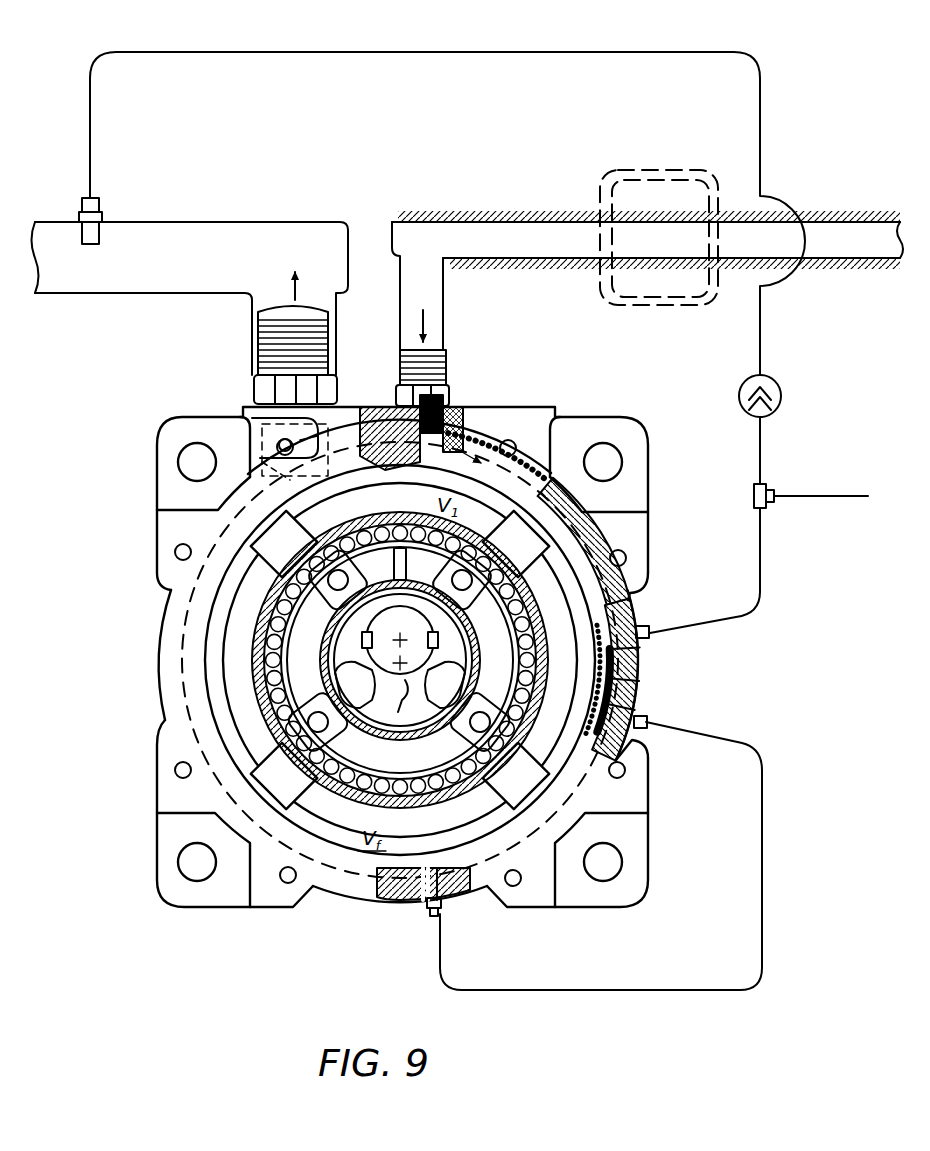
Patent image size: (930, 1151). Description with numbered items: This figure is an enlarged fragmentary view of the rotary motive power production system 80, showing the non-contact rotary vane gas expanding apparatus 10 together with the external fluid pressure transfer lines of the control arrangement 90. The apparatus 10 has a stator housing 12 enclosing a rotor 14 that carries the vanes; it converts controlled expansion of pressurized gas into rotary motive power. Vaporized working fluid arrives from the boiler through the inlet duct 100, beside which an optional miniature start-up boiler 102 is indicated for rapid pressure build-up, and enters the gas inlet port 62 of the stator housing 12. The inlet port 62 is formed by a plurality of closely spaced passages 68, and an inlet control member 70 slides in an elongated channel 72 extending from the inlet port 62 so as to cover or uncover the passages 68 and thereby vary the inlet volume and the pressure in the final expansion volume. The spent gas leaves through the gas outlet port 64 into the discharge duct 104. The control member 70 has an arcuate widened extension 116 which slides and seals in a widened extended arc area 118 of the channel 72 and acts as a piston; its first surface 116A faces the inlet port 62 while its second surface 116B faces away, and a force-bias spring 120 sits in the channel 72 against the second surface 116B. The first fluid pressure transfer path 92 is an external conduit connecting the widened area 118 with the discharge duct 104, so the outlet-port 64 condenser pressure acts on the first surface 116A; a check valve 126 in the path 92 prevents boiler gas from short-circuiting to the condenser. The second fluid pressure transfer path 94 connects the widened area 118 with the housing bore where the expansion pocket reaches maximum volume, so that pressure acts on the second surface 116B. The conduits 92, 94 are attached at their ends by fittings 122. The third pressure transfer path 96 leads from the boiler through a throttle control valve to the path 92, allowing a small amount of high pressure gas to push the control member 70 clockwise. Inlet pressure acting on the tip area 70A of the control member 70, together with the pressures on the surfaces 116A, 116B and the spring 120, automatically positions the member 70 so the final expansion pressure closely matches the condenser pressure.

The non-contact rotary vane gas expanding apparatus 10 is at (155, 608).
The stator housing 12 is at (150, 702).
The rotor 14 is at (220, 658).
The gas inlet port 62 is at (466, 420).
The gas outlet port 64 is at (233, 472).
The passages 68 is at (318, 512).
The inlet control member 70 is at (588, 520).
The tip area 70A is at (530, 426).
The channel 72 is at (580, 588).
The rotary motive power production system 80 is at (416, 216).
The control arrangement 90 is at (768, 618).
The first fluid pressure transfer path 92 is at (350, 52).
The second fluid pressure transfer path 94 is at (598, 992).
The third pressure transfer path 96 is at (822, 496).
The inlet duct 100 is at (850, 222).
The start-up boiler 102 is at (632, 170).
The discharge duct 104 is at (120, 293).
The arcuate shaped widened extension 116 is at (640, 682).
The first surface 116A is at (640, 662).
The second surface 116B is at (638, 704).
The widened extended arc area 118 is at (640, 606).
The force-bias spring 120 is at (608, 766).
The fittings 122 is at (100, 206).
The check valve 126 is at (776, 382).